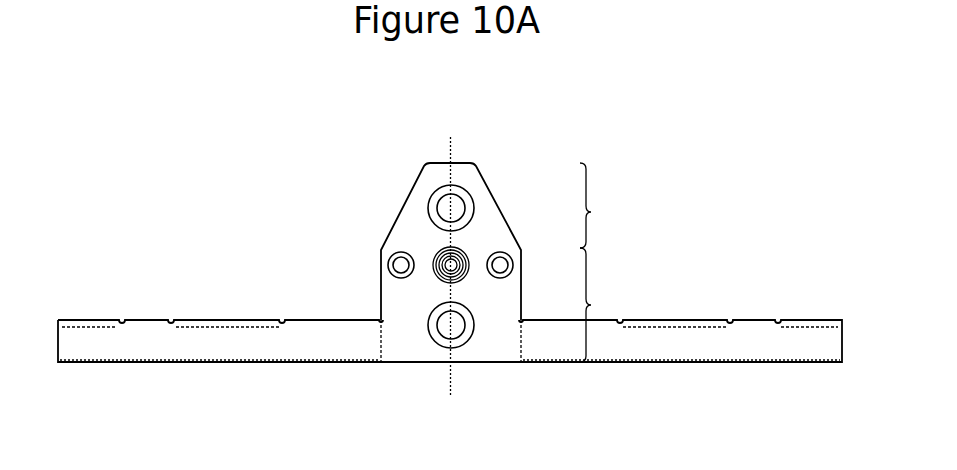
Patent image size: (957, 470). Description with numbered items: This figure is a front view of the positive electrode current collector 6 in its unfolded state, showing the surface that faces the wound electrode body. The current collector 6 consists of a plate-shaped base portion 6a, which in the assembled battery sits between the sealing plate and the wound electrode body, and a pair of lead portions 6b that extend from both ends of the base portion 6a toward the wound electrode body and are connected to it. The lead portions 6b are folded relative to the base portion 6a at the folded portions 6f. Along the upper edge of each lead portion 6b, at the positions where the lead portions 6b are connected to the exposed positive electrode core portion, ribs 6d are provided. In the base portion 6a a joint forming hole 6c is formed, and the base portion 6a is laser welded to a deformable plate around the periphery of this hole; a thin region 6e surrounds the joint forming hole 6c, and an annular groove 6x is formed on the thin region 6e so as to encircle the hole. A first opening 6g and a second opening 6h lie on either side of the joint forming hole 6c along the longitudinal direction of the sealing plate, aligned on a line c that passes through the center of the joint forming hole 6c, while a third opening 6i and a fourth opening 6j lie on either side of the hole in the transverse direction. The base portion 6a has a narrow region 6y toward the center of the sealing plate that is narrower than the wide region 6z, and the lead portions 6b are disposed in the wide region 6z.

The positive electrode current collector 6 is at (385, 83).
The base portion 6a is at (407, 228).
The lead portions 6b is at (219, 350).
The joint forming hole 6c is at (456, 238).
The ribs 6d is at (93, 322).
The thin region 6e is at (437, 278).
The folded portions 6f is at (381, 338).
The first opening 6g is at (436, 197).
The second opening 6h is at (455, 328).
The third opening 6i is at (389, 258).
The fourth opening 6j is at (500, 275).
The annular groove 6x is at (458, 252).
The narrow region 6y is at (599, 205).
The wide region 6z is at (598, 305).
The line c is at (452, 153).